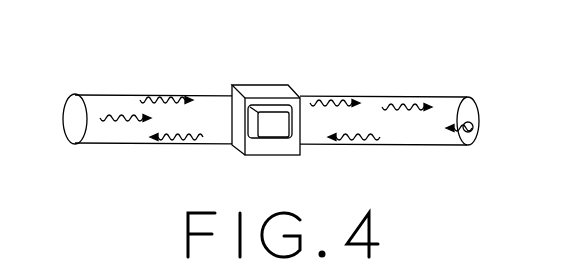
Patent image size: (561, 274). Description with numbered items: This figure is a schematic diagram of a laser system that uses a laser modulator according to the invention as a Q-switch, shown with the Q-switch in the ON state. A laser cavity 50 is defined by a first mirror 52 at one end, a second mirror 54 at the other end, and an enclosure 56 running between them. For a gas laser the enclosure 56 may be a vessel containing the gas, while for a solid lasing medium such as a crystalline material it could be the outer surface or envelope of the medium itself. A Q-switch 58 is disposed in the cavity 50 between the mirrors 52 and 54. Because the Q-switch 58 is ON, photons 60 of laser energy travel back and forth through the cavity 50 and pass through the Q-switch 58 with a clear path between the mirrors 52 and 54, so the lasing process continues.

The laser cavity 50 is at (343, 100).
The first mirror 52 is at (63, 108).
The second mirror 54 is at (467, 97).
The enclosure 56 is at (118, 93).
The Q-switch 58 is at (268, 90).
The photons 60 is at (163, 95).